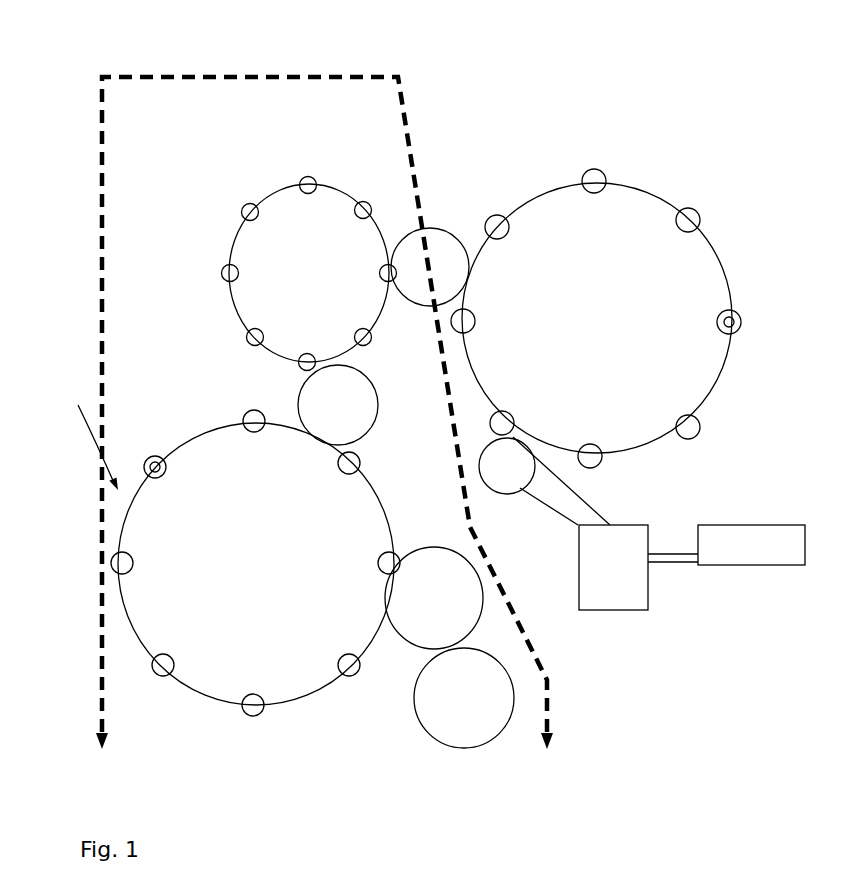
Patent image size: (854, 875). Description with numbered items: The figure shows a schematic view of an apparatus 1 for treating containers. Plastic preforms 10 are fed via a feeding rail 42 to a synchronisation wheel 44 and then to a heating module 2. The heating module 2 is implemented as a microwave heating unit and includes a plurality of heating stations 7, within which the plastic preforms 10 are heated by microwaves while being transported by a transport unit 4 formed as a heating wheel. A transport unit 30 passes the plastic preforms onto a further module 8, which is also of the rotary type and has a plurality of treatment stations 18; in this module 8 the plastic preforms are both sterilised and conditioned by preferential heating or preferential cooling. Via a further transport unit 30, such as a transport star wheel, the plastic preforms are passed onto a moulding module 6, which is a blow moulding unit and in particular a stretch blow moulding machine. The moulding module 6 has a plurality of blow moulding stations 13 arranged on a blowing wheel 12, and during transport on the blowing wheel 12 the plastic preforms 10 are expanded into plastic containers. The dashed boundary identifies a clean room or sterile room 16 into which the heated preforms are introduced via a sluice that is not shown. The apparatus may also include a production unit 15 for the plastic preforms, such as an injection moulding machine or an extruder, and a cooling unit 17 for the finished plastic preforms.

The apparatus 1 is at (410, 428).
The heating module 2 is at (632, 259).
The transport unit 4 is at (632, 273).
The moulding module 6 is at (92, 433).
The heating station 7 is at (700, 425).
The further module 8 is at (298, 192).
The plastic preform 10 is at (154, 458).
The blowing wheel 12 is at (407, 496).
The blow moulding station 13 is at (246, 707).
The production unit 15 is at (726, 545).
The clean room 16 is at (100, 210).
The cooling unit 17 is at (613, 567).
The treatment station 18 is at (309, 176).
The transport unit 30 is at (447, 246).
The feeding rail 42 is at (556, 501).
The synchronisation wheel 44 is at (526, 468).